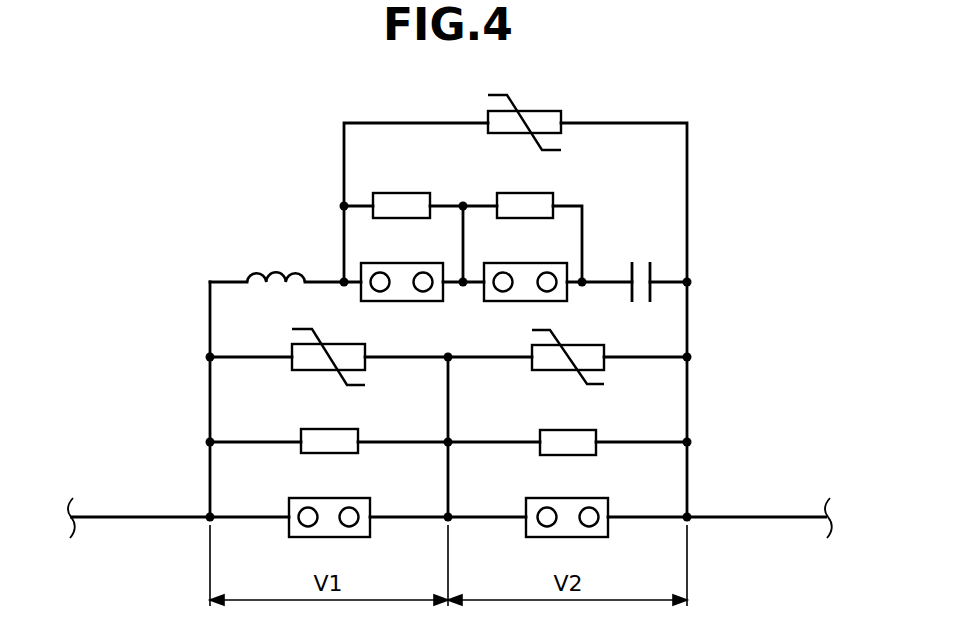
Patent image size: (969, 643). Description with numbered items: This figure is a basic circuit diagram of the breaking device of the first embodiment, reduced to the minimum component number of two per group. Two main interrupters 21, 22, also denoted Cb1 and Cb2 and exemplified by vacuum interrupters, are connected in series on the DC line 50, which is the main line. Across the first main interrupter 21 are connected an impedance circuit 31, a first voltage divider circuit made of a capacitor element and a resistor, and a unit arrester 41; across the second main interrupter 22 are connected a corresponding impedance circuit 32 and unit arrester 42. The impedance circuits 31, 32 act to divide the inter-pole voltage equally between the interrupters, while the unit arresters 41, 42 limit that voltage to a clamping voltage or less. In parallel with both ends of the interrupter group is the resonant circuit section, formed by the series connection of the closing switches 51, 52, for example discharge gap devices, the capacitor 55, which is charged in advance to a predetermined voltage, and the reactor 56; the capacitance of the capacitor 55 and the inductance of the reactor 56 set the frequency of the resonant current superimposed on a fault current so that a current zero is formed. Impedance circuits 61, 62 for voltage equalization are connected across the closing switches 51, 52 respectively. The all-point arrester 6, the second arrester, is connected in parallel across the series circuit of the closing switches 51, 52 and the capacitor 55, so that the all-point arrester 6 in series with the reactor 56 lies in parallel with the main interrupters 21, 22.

The all-point arrester 6 is at (546, 86).
The impedance circuit 61 is at (410, 173).
The impedance circuit 62 is at (529, 173).
The closing switch 51 is at (404, 262).
The closing switch 52 is at (524, 262).
The capacitor 55 is at (641, 261).
The reactor 56 is at (274, 265).
The unit arrester 41 is at (356, 323).
The unit arrester 42 is at (594, 323).
The impedance circuit 31 is at (337, 407).
The impedance circuit 32 is at (577, 408).
The main interrupter 21 is at (338, 477).
The main interrupter 22 is at (578, 477).
The DC line 50 is at (140, 516).